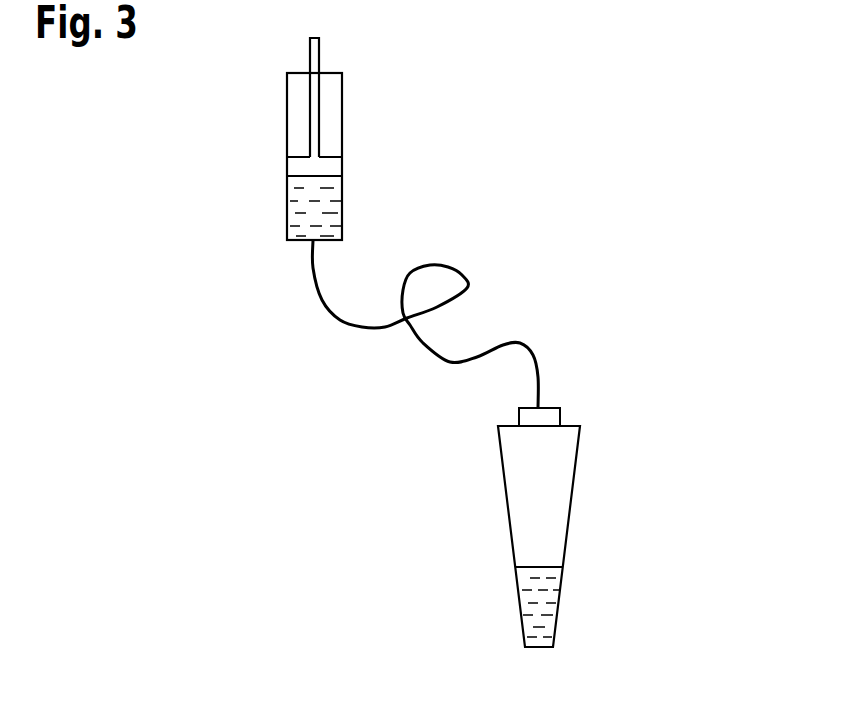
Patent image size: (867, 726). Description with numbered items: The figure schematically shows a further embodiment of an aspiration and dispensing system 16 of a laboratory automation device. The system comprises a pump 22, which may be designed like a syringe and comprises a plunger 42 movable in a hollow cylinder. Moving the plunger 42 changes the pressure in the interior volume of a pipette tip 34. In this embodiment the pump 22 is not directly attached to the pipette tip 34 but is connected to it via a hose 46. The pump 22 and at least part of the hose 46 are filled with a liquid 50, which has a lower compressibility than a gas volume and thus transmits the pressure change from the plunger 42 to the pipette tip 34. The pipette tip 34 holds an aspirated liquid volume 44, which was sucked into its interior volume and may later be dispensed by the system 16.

The aspiration and dispensing system 16 is at (700, 128).
The pump 22 is at (342, 113).
The plunger 42 is at (306, 165).
The liquid 50 is at (325, 210).
The hose 46 is at (541, 372).
The pipette tip 34 is at (538, 510).
The aspirated liquid volume 44 is at (540, 592).